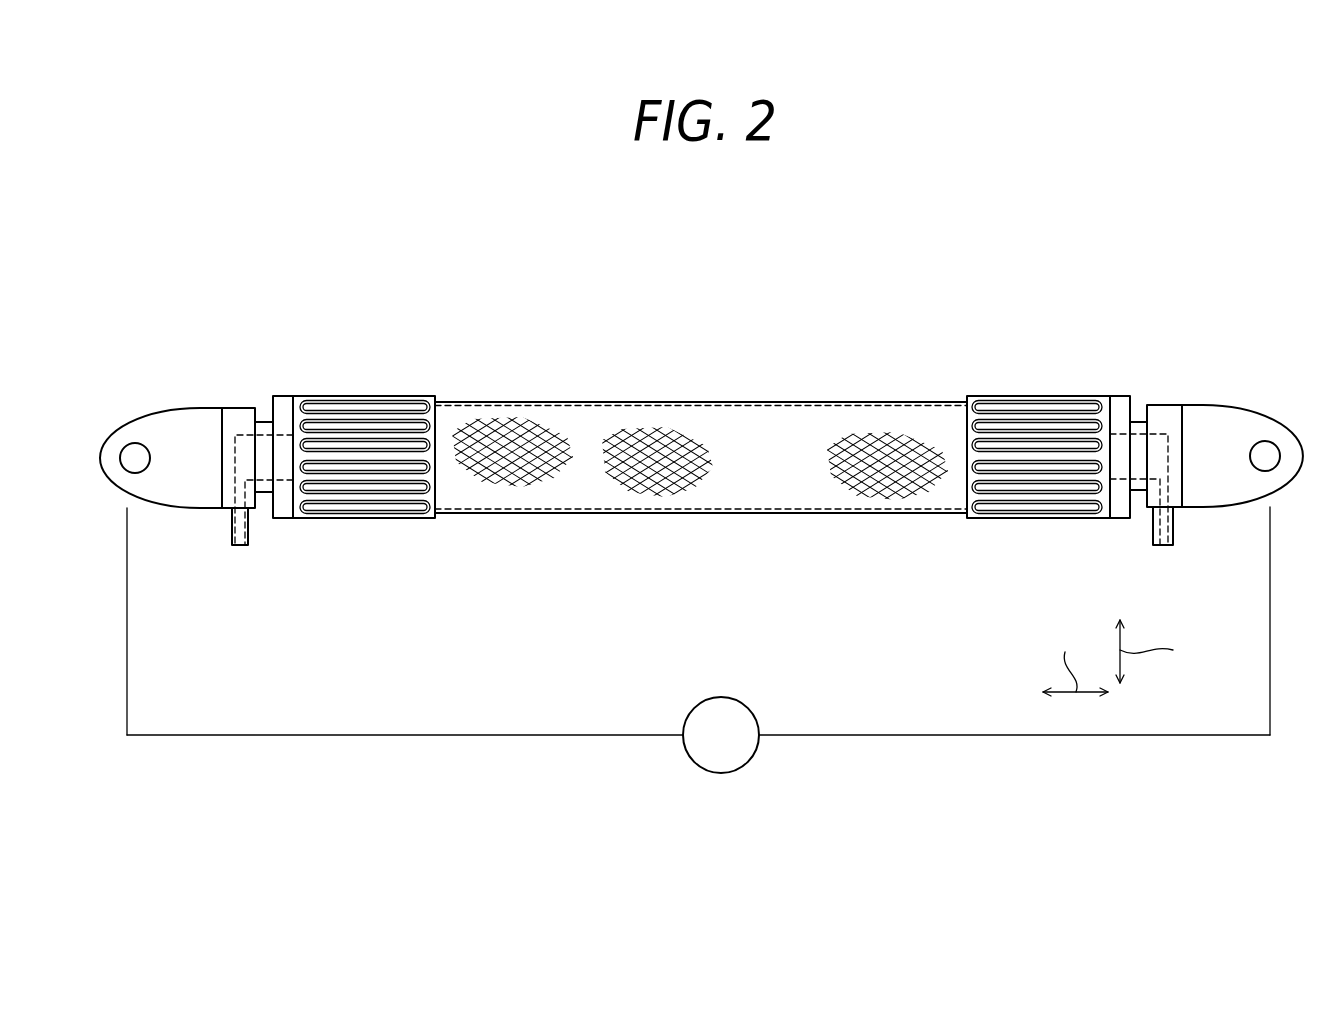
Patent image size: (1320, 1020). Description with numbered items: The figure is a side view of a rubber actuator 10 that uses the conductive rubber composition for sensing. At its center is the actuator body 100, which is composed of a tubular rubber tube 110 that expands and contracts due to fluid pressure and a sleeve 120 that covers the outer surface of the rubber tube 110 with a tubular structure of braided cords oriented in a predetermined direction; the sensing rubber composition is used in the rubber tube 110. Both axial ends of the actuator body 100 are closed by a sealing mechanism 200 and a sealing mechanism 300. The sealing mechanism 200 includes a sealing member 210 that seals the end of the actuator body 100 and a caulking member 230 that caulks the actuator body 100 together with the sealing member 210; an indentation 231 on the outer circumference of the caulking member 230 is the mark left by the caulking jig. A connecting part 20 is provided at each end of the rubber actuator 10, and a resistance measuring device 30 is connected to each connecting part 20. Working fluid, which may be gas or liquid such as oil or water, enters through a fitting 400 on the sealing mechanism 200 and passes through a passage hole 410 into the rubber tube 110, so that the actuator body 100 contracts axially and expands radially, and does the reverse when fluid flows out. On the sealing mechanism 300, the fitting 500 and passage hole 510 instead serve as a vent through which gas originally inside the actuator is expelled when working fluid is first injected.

The rubber actuator 10 is at (701, 495).
The connecting part 20 is at (162, 488).
The resistance measuring device 30 is at (722, 697).
The actuator body 100 is at (700, 422).
The rubber tube 110 is at (731, 403).
The sleeve 120 is at (768, 318).
The sealing mechanism 200 is at (345, 439).
The sealing member 210 is at (281, 396).
The caulking member 230 is at (364, 462).
The indentation 231 is at (383, 488).
The sealing mechanism 300 is at (1044, 392).
The fitting 400 is at (252, 537).
The passage hole 410 is at (267, 491).
The fitting 500 is at (1139, 464).
The passage hole 510 is at (1137, 433).